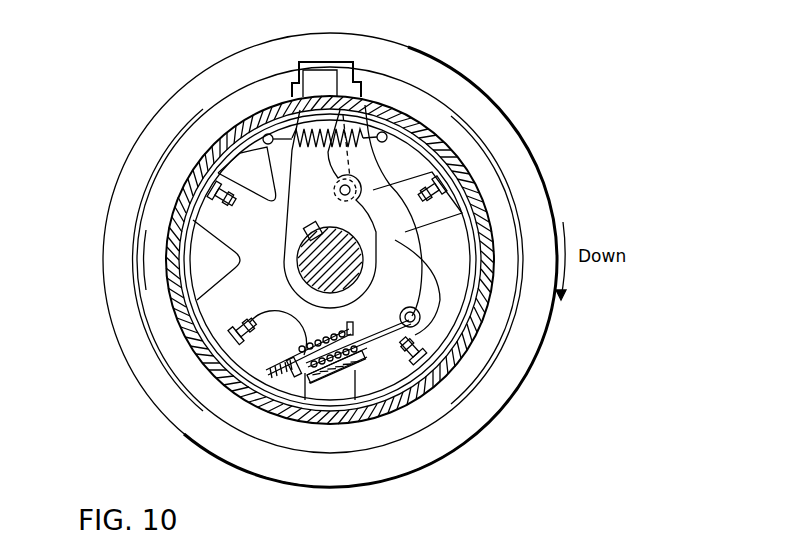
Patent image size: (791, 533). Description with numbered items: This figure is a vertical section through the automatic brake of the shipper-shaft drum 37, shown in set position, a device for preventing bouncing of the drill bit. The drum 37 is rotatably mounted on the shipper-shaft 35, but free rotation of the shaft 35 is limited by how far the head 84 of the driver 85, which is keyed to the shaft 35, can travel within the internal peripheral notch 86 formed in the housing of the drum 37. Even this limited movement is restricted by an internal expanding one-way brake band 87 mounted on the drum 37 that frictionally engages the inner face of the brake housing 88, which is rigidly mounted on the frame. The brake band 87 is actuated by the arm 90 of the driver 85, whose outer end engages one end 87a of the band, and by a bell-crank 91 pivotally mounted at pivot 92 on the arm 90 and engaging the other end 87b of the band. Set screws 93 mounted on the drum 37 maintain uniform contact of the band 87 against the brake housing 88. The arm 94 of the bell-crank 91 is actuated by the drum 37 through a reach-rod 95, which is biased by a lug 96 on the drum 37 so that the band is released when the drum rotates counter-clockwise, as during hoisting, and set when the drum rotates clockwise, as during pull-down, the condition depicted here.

The shipper-shaft 35 is at (298, 260).
The shipper-shaft drum 37 is at (147, 137).
The head of driver 84 is at (293, 82).
The driver 85 is at (327, 122).
The internal peripheral notch 86 is at (345, 62).
The internal expanding one-way brake band 87 is at (440, 160).
The one end of brake band 87a is at (290, 118).
The other end of brake band 87b is at (397, 116).
The brake housing 88 is at (463, 184).
The arm of driver 90 is at (307, 165).
The bell-crank 91 is at (400, 235).
The pivot 92 is at (334, 190).
The set screws 93 is at (230, 216).
The arm of bell-crank 94 is at (413, 288).
The reach-rod 95 is at (387, 323).
The lug 96 is at (360, 390).